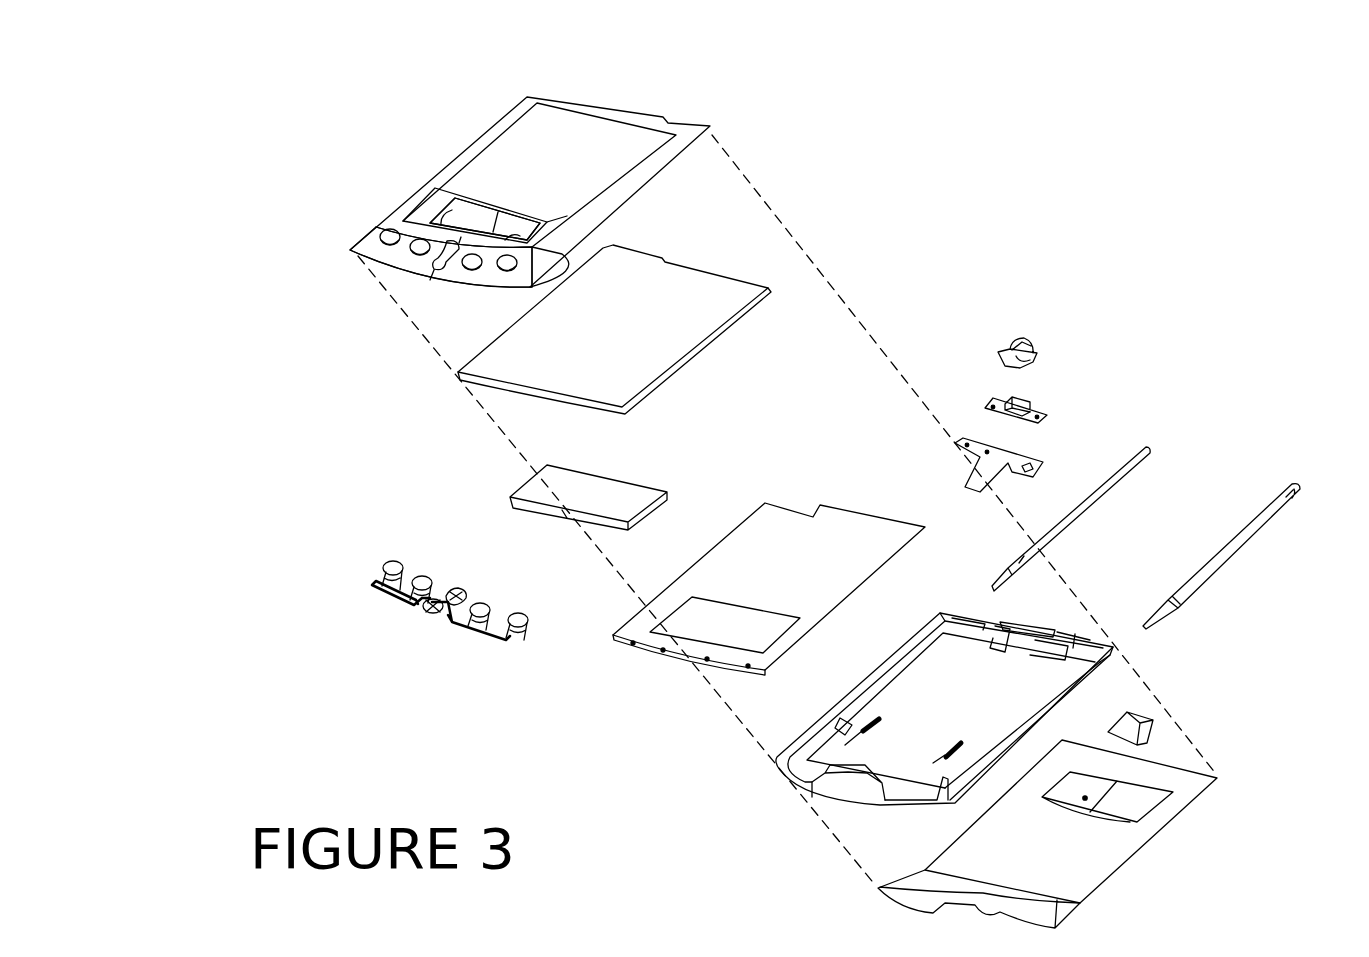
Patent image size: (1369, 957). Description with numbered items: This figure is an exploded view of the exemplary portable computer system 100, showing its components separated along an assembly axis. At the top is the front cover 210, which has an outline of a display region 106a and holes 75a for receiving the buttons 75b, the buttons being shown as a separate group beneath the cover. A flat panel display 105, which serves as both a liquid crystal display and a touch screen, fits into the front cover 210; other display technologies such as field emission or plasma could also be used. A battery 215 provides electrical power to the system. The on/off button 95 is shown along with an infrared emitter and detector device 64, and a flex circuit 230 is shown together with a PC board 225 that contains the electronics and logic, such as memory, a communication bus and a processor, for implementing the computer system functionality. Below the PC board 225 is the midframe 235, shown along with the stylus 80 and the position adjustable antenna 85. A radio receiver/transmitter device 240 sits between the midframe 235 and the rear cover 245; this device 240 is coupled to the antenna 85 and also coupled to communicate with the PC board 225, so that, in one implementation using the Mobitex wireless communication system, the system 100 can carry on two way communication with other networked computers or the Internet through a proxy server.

The portable computer system 100 is at (217, 94).
The front cover 210 is at (708, 129).
The display window 106a is at (453, 210).
The holes 75a is at (358, 240).
The flat panel display 105 is at (737, 279).
The battery 215 is at (519, 487).
The buttons 75b is at (383, 571).
The PC board 225 is at (638, 608).
The midframe 235 is at (1093, 686).
The radio receiver/transmitter device 240 is at (1157, 731).
The rear cover 245 is at (1157, 834).
The on/off button 95 is at (1018, 337).
The infrared emitter and detector device 64 is at (1042, 409).
The flex circuit 230 is at (1034, 455).
The position adjustable antenna 85 is at (1148, 445).
The stylus 80 is at (1266, 529).